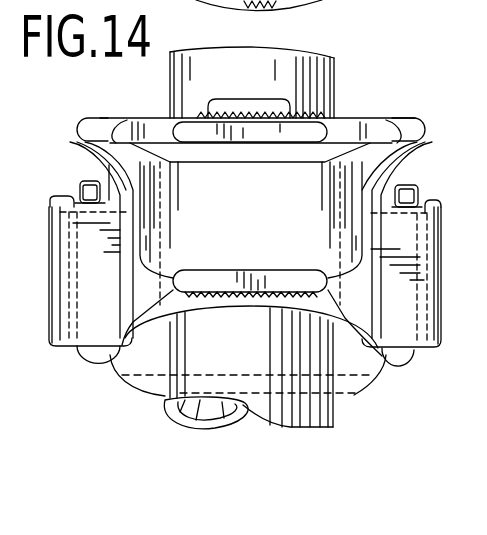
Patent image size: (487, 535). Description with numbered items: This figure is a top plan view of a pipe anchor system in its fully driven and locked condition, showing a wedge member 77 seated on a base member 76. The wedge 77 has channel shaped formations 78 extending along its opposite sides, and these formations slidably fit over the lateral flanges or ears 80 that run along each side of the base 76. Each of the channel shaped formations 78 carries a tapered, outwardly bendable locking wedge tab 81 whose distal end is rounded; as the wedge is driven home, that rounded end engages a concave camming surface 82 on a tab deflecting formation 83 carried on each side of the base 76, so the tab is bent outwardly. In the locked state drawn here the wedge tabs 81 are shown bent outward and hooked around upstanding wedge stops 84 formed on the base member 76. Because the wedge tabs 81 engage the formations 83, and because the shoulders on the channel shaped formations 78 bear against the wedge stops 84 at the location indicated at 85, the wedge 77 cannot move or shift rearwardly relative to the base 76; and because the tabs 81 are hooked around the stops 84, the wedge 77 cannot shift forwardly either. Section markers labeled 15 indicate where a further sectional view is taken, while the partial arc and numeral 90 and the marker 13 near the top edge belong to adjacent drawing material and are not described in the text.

The base member 76 is at (275, 229).
The wedge member 77 is at (358, 390).
The channel shaped formations 78 is at (442, 283).
The lateral flanges or ears 80 is at (95, 361).
The locking wedge tab 81 is at (78, 140).
The concave camming surface 82 is at (113, 119).
The tab deflecting formation 83 is at (89, 118).
The wedge stops 84 is at (80, 186).
The shoulder engagement 85 is at (58, 196).
The section line 15- 15 is at (80, 420).
The section indicator 13 is at (438, 4).
The housing portion 90 is at (331, 0).